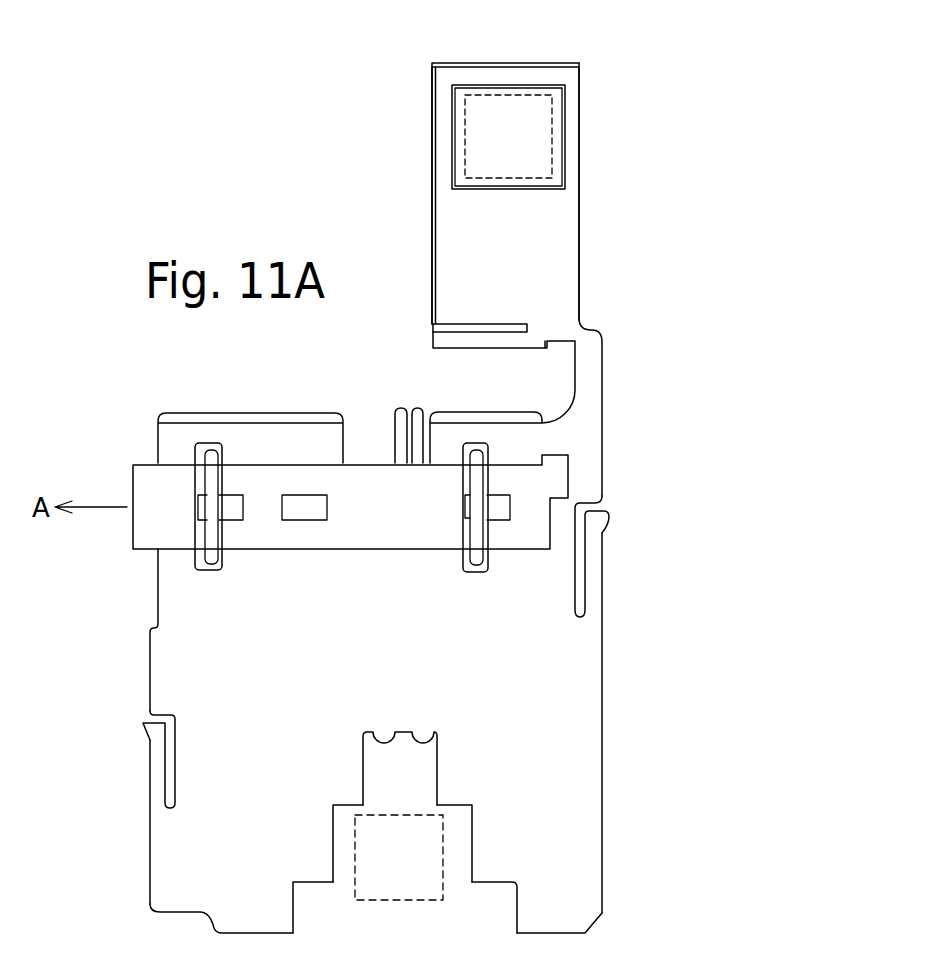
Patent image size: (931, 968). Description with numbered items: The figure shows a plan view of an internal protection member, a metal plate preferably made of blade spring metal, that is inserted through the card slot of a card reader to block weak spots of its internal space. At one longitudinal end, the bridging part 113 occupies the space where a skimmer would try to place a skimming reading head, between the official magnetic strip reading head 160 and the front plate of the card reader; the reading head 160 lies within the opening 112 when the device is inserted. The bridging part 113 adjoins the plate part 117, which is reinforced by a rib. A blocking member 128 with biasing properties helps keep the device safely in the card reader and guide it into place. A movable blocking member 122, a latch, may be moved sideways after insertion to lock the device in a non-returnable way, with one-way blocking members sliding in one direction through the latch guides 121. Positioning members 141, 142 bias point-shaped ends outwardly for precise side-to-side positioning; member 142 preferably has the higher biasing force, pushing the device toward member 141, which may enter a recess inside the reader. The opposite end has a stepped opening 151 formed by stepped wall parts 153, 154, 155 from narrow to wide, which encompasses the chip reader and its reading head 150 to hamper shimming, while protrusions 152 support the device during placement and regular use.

The bridging part 113 is at (505, 75).
The plate part 117 is at (513, 288).
The blocking member 128 is at (445, 340).
The magnetic strip reading head 160 is at (483, 157).
The opening 112 is at (546, 126).
The movable blocking member 122 is at (395, 497).
The latch guide 121 is at (210, 453).
The positioning member 141 is at (592, 547).
The positioning member 142 is at (158, 773).
The protrusion 152 is at (442, 743).
The stepped wall part 153 is at (362, 768).
The stepped wall part 154 is at (333, 840).
The stepped wall part 155 is at (292, 908).
The reading head 150 is at (418, 900).
The stepped opening 151 is at (373, 890).